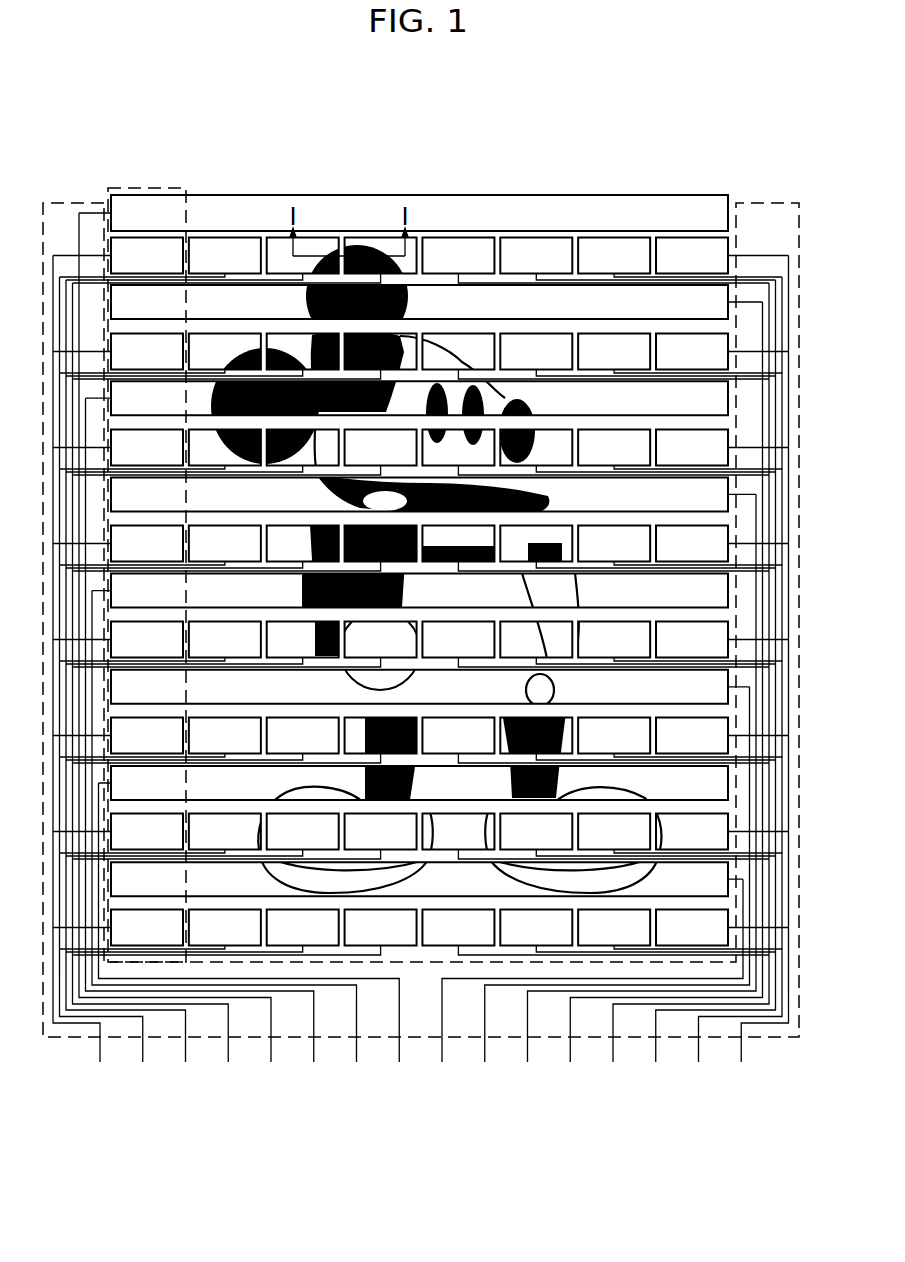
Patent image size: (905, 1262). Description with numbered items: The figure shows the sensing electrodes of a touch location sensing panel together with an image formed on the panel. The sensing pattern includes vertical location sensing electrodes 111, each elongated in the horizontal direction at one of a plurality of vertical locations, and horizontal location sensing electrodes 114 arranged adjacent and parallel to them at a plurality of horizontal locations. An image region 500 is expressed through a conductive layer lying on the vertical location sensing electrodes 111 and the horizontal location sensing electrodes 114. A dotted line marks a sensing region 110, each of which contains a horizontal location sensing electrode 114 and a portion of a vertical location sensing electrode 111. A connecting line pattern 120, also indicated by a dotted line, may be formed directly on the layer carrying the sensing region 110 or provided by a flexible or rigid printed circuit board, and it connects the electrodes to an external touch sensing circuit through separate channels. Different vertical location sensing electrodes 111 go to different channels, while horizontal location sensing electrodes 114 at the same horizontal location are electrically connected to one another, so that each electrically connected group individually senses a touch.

The sensing region 110 is at (146, 188).
The vertical location sensing electrode 111 is at (520, 195).
The horizontal location sensing electrode 114 is at (214, 243).
The connecting line pattern 120 is at (760, 203).
The image region 500 is at (354, 248).